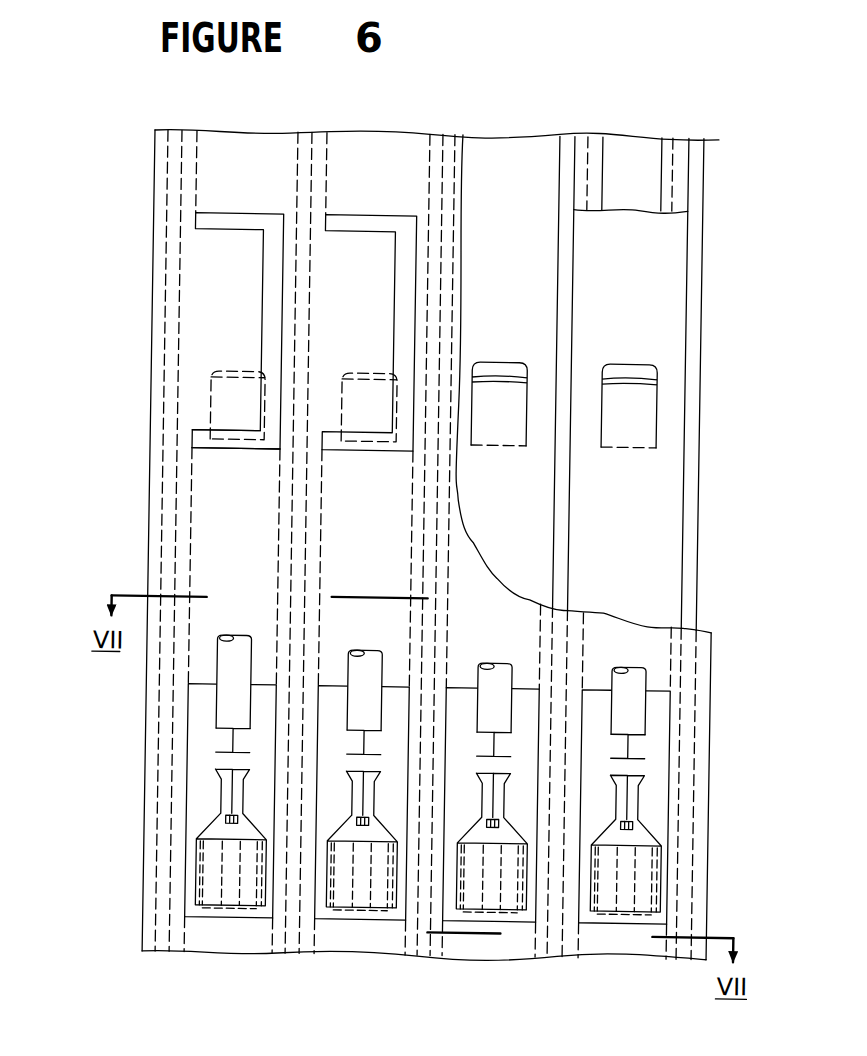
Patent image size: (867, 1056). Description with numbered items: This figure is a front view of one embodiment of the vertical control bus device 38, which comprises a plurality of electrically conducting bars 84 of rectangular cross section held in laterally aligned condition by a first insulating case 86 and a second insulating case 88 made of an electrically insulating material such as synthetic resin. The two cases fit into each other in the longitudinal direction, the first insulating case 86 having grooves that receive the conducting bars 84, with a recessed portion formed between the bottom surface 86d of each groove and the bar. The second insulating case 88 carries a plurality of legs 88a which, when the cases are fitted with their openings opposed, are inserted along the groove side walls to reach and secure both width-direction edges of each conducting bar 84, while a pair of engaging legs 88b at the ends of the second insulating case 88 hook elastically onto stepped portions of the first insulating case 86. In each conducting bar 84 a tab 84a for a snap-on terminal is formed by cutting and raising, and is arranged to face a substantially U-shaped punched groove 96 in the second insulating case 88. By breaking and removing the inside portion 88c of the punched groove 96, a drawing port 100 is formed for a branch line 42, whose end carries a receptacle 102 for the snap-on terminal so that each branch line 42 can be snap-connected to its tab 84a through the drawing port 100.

The vertical control bus device 38 is at (134, 231).
The branch line 42 is at (228, 659).
The conducting bar 84 is at (497, 153).
The tab for snap-on terminal 84a is at (233, 371).
The first insulating case 86 is at (757, 538).
The bottom surface 86d is at (698, 369).
The second insulating case 88 is at (721, 717).
The leg 88a is at (197, 929).
The engaging leg 88b is at (150, 929).
The inside portion of punched groove 88c is at (227, 252).
The punched groove 96 is at (242, 447).
The drawing port 100 is at (276, 683).
The receptacle for snap-on terminal 102 is at (229, 820).